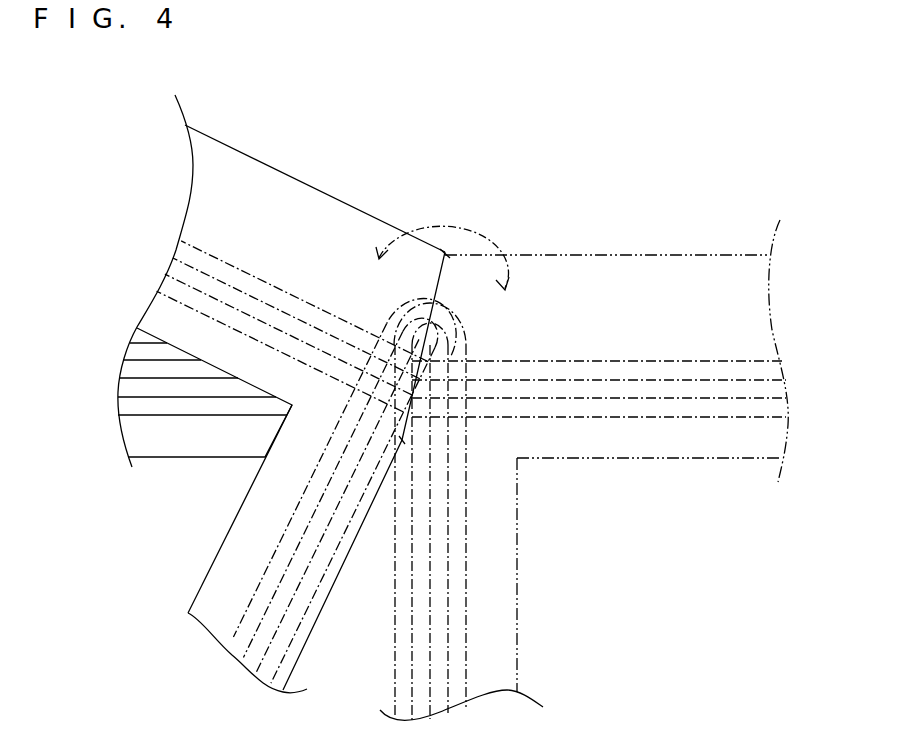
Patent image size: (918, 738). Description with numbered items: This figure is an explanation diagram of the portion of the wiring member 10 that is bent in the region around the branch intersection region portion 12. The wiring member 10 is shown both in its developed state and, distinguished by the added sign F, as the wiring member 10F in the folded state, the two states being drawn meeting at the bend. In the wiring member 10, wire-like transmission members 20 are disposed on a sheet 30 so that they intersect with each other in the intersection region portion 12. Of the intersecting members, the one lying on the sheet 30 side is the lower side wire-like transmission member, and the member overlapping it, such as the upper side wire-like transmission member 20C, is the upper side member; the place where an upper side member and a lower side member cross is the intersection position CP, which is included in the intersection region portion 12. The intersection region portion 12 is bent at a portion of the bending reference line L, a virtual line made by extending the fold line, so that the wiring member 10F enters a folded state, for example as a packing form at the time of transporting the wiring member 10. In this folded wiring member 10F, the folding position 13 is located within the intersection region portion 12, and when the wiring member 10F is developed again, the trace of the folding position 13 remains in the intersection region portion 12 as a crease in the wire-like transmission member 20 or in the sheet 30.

The wiring member 10 is at (737, 204).
The wiring member in folded state 10F is at (345, 94).
The wire-like transmission member 20 is at (217, 260).
The sheet 30 is at (287, 188).
The upper side wire-like transmission member 20C is at (250, 600).
The intersection region portion 12 is at (367, 297).
The folding position 13 is at (443, 286).
The bending reference line L is at (458, 203).
The intersection position CP is at (413, 404).